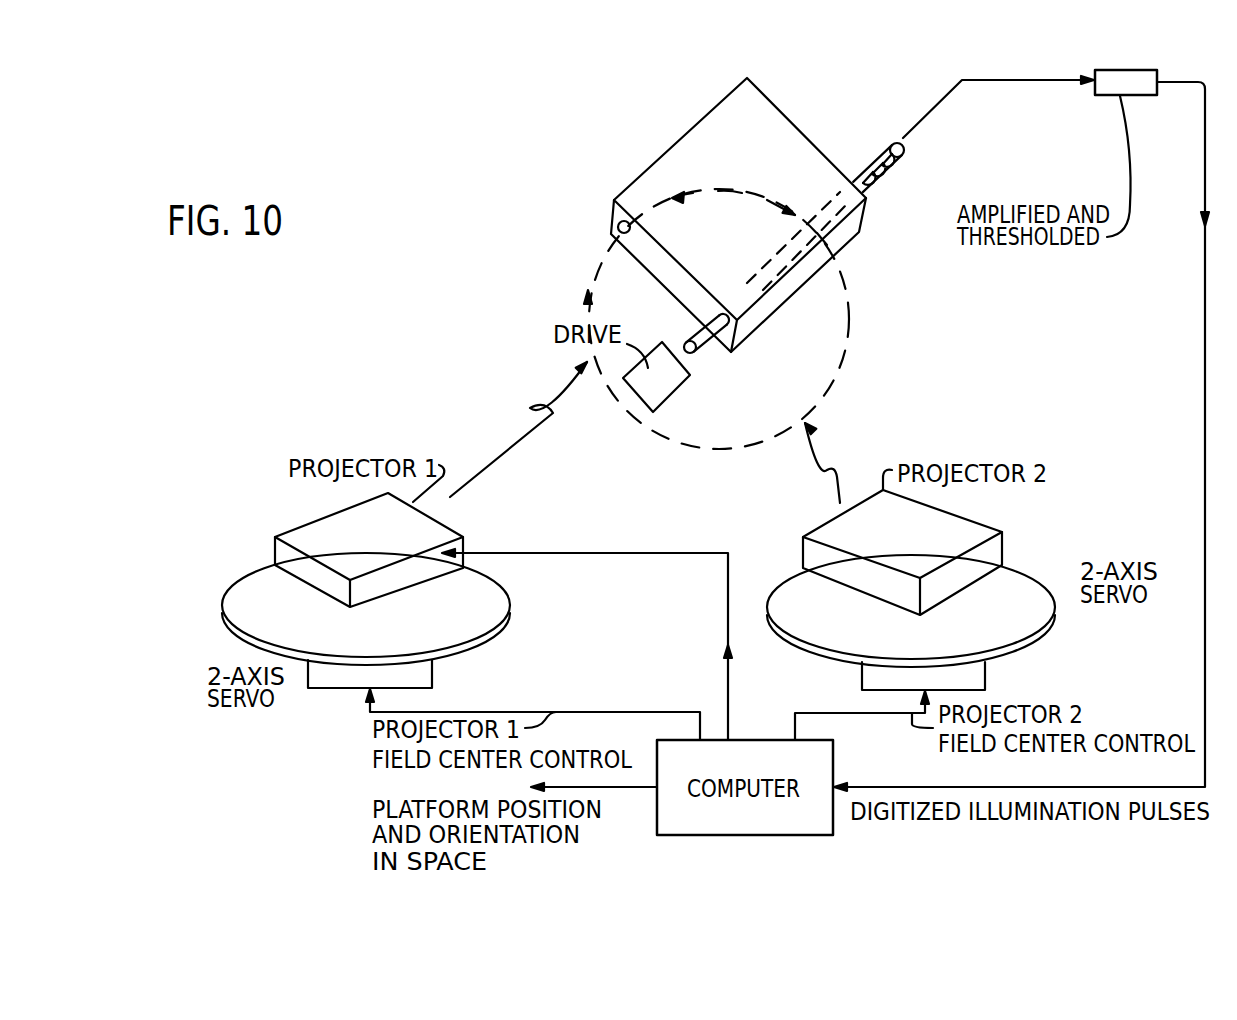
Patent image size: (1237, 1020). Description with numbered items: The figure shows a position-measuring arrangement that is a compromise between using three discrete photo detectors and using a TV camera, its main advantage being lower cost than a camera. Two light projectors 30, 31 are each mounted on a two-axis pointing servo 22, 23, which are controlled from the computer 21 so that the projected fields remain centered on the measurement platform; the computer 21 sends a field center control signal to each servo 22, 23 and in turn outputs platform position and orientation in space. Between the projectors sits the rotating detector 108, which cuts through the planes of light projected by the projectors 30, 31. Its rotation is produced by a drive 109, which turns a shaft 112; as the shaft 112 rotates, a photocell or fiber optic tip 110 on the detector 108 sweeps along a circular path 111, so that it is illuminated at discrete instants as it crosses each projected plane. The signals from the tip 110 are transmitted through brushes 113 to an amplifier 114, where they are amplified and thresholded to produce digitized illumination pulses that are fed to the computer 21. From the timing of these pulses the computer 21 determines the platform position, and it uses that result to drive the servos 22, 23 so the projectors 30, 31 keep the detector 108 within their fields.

The computer 21 is at (678, 828).
The 2-axis pointing servo 22 is at (272, 632).
The 2-axis pointing servo 23 is at (1042, 583).
The light projector 30 is at (323, 527).
The light projector 31 is at (928, 521).
The rotating detector 108 is at (660, 145).
The drive 109 is at (674, 402).
The photocell or fiber optic tip 110 is at (616, 223).
The path 111 is at (694, 207).
The shaft 112 is at (692, 330).
The brushes 113 is at (892, 163).
The amplifier 114 is at (1145, 68).